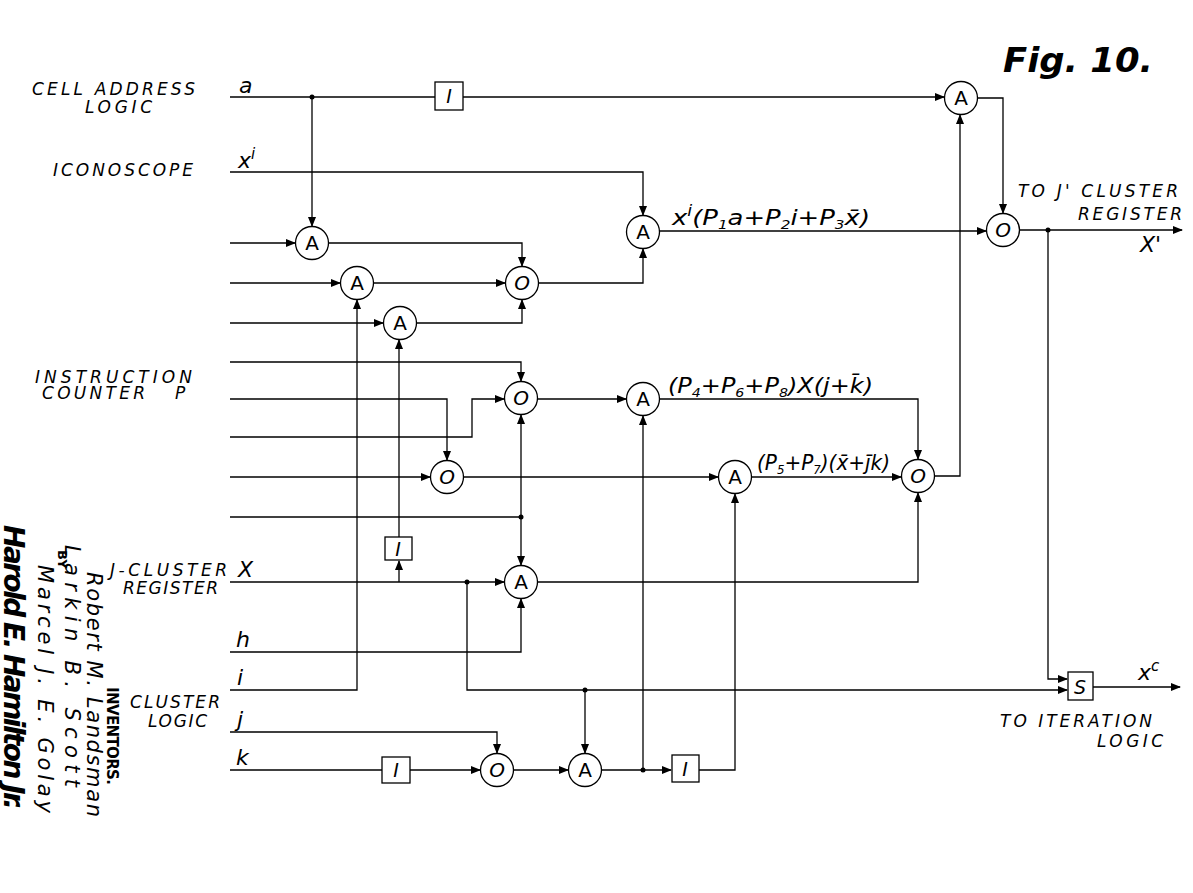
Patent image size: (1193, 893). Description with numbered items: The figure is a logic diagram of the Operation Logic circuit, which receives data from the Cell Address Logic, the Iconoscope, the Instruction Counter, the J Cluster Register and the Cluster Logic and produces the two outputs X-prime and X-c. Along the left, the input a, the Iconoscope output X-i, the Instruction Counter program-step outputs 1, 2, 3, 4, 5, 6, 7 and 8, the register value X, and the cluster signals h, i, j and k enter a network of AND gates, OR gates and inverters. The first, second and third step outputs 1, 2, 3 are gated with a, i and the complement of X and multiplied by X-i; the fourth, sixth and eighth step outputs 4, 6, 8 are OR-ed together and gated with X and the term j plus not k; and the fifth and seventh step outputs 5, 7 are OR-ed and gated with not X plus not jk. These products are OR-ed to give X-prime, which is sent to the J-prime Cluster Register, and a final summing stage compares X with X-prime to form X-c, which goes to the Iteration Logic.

The instruction counter output P1 1 is at (262, 232).
The instruction counter output P2 2 is at (285, 272).
The instruction counter output P3 3 is at (306, 313).
The instruction counter output P4 4 is at (375, 359).
The instruction counter output P5 5 is at (338, 417).
The instruction counter output P6 6 is at (367, 419).
The instruction counter output P7 7 is at (330, 466).
The instruction counter output P8 8 is at (377, 490).